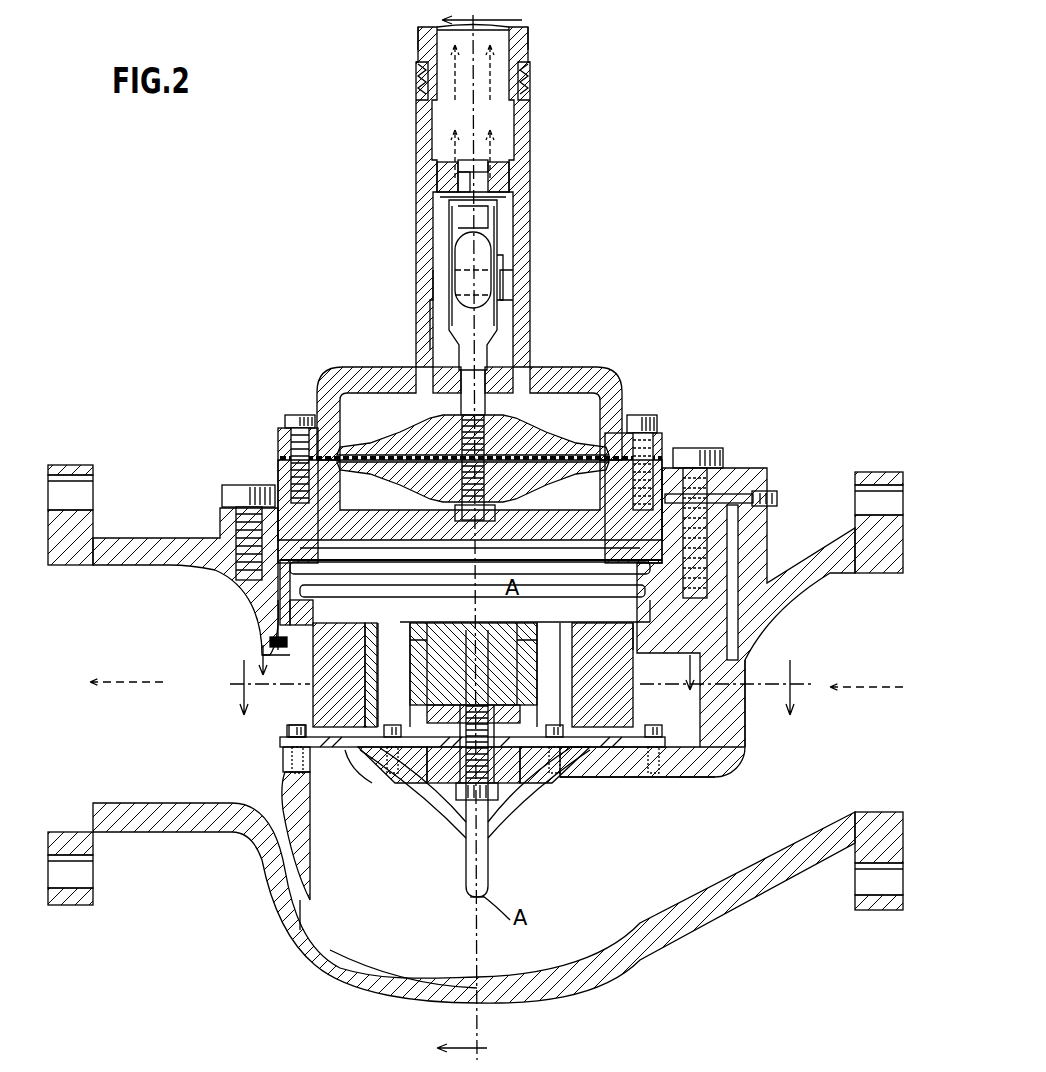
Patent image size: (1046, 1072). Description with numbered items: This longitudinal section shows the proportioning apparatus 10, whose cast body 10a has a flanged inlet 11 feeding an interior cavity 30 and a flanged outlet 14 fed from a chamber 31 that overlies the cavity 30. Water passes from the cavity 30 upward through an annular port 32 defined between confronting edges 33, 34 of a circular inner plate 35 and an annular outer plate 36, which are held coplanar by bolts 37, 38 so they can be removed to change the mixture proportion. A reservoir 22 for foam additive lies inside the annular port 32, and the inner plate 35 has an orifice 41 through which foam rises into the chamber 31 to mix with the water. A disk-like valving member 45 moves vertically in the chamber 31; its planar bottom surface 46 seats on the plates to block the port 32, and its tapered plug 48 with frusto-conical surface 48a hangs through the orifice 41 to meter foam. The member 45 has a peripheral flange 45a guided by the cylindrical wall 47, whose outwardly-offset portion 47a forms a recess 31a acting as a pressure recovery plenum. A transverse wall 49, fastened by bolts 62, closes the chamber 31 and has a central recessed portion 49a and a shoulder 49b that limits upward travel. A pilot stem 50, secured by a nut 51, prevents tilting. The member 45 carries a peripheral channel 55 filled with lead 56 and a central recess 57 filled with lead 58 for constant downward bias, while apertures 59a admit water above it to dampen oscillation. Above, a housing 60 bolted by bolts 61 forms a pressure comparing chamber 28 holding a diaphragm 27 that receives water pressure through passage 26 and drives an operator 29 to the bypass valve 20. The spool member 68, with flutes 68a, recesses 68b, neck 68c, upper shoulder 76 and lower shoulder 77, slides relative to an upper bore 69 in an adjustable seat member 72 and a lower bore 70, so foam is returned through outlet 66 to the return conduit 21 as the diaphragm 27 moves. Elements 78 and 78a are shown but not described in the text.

The proportioning apparatus 10 is at (262, 446).
The cast body 10a is at (616, 978).
The inlet 11 is at (866, 575).
The outlet 14 is at (112, 803).
The bypass valve 20 is at (416, 240).
The conduit 21 is at (418, 38).
The reservoir 22 is at (492, 822).
The passage 26 is at (742, 592).
The diaphragm 27 is at (370, 452).
The pressure comparing chamber 28 is at (592, 385).
The operator 29 is at (486, 405).
The interior cavity 30 is at (362, 958).
The chamber 31 is at (300, 612).
The recess 31a is at (682, 742).
The annular port 32 is at (358, 762).
The edge 33 is at (376, 752).
The edge 34 is at (285, 778).
The circular inner plate 35 is at (402, 752).
The annular outer plate 36 is at (290, 740).
The bolts 37 is at (393, 726).
The bolts 38 is at (297, 726).
The orifice 41 is at (522, 792).
The valving member 45 is at (590, 575).
The peripheral flange 45a is at (270, 643).
The bottom surface 46 is at (612, 762).
The cylindrical wall 47 is at (662, 622).
The outwardly-offset portion 47a is at (702, 735).
The tapered plug 48 is at (462, 792).
The frusto-conical peripheral surface 48a is at (580, 778).
The wall 49 is at (312, 563).
The central recessed portion 49a is at (408, 562).
The annular peripheral shoulder 49b is at (283, 575).
The pilot stem 50 is at (486, 892).
The nut 51 is at (492, 800).
The peripheral channel 55 is at (600, 650).
The quantity of denser material 56 is at (342, 650).
The central recess 57 is at (432, 682).
The quantity of lead 58 is at (518, 692).
The apertures 59a is at (430, 630).
The housing 60 is at (530, 335).
The bolts 61 is at (296, 416).
The bolts 62 is at (238, 492).
The outlet 66 is at (530, 80).
The spool member 68 is at (452, 312).
The flutes 68a is at (482, 262).
The recesses 68b is at (448, 178).
The neck portion 68c is at (500, 196).
The upper bore 69 is at (460, 165).
The lower bore 70 is at (500, 286).
The seat member 72 is at (490, 176).
The upper shoulder 76 is at (462, 216).
The lower shoulder 77 is at (466, 326).
The left clamp ring 78 is at (285, 470).
The right clamp ring 78a is at (600, 465).